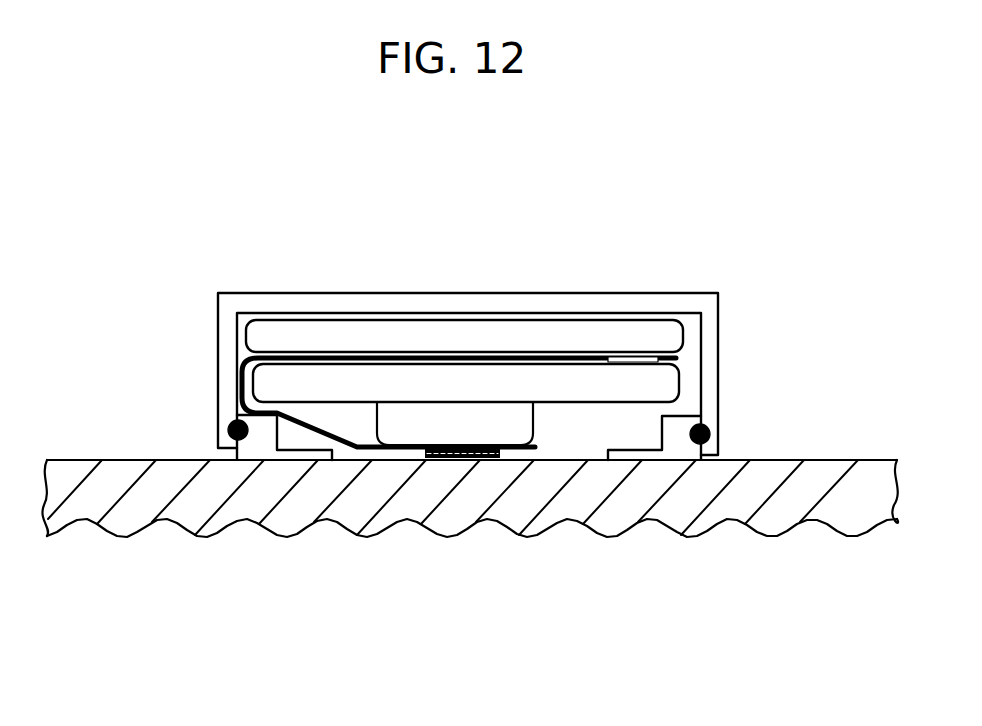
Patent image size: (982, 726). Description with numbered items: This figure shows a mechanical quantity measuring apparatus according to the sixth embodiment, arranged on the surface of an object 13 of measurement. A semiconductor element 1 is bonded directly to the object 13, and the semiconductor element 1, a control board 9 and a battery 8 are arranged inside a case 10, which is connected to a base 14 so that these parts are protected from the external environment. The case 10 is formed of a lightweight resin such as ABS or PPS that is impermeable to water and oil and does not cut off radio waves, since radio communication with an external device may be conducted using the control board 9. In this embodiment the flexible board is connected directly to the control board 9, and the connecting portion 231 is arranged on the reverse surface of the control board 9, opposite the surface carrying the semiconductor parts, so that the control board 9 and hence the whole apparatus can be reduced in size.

The semiconductor element 1 is at (453, 458).
The battery 8 is at (423, 377).
The control board 9 is at (545, 338).
The case 10 is at (710, 332).
The object of measurement 13 is at (182, 508).
The base 14 is at (252, 426).
The connecting portion 231 is at (647, 357).